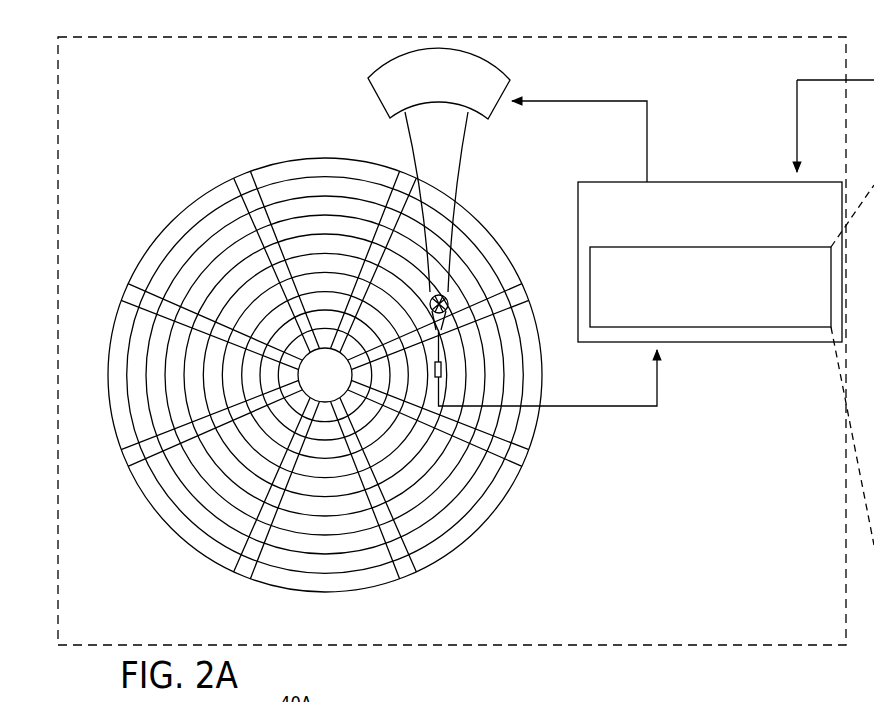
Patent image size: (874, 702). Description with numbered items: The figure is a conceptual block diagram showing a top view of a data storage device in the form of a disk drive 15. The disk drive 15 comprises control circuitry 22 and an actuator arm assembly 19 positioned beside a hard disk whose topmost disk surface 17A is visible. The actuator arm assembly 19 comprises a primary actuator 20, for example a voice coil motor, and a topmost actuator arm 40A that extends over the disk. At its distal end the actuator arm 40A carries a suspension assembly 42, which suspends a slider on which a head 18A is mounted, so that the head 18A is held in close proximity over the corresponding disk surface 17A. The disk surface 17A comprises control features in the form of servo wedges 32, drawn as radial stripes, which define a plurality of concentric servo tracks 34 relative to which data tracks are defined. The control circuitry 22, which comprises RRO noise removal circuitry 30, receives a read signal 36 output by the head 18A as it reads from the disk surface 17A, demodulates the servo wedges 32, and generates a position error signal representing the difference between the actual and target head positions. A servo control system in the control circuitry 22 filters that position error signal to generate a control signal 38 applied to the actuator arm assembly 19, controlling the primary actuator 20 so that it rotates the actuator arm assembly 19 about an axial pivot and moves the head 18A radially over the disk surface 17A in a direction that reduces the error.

The disk drive 15 is at (790, 652).
The disk surface 17A is at (176, 208).
The head 18A is at (446, 374).
The actuator arm assembly 19 is at (490, 144).
The primary actuator 20 is at (500, 111).
The control circuitry 22 is at (699, 235).
The RRO noise removal circuitry 30 is at (699, 321).
The servo wedges 32 is at (425, 598).
The servo tracks 34 is at (335, 182).
The read signal 36 is at (634, 409).
The control signal 38 is at (648, 122).
The actuator arm 40A is at (457, 183).
The suspension assembly 42 is at (530, 697).